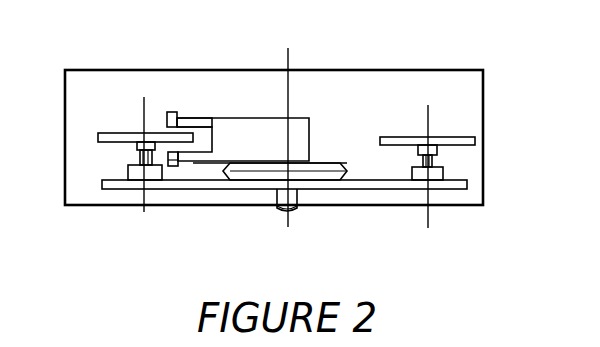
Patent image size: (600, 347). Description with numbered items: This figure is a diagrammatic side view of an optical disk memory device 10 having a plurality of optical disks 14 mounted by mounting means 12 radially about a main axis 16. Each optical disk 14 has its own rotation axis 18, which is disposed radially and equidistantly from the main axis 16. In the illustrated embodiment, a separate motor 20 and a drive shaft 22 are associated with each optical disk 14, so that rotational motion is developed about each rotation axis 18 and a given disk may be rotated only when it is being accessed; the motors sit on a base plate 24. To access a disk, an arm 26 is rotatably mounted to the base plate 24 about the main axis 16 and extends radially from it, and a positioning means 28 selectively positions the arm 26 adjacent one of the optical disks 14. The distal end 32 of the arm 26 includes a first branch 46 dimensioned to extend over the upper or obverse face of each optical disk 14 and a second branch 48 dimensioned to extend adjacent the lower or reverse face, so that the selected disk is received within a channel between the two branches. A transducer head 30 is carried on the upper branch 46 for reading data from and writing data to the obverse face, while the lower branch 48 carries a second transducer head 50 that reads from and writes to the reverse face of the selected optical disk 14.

The optical disk memory device 10 is at (421, 70).
The means for mounting 12 is at (137, 146).
The optical disk 14 is at (108, 133).
The main axis 16 is at (288, 50).
The rotation axis 18 is at (144, 110).
The motor 20 is at (130, 170).
The drive shaft 22 is at (432, 162).
The base plate 24 is at (380, 185).
The arm 26 is at (258, 117).
The means for selectively positioning arm 28 is at (333, 162).
The transducer head 30 is at (175, 112).
The distal end 32 is at (222, 138).
The first branch 46 is at (200, 127).
The second branch 48 is at (197, 157).
The second transducer head 50 is at (172, 167).